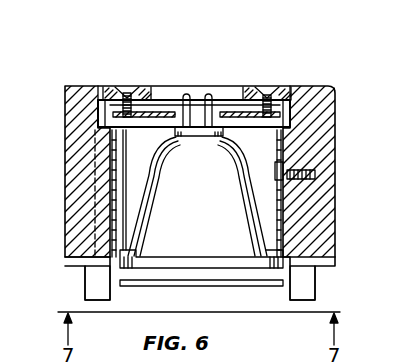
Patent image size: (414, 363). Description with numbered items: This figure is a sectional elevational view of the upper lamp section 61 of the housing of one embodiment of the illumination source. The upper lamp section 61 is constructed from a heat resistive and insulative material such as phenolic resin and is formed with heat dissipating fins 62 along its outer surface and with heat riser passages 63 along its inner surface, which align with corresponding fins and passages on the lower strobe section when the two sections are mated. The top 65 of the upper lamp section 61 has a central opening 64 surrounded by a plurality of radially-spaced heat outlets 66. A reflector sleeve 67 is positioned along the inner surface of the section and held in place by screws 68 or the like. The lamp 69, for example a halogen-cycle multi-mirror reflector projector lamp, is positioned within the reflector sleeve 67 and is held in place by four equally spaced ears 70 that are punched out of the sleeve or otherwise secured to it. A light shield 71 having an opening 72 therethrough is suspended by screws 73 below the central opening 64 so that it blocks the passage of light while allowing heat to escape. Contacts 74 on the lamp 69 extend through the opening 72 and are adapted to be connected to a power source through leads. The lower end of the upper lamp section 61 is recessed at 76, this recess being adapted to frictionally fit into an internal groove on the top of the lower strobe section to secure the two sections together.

The upper lamp section 61 is at (343, 158).
The heat dissipating fins 62 is at (337, 236).
The heat riser passages 63 is at (95, 213).
The central opening 64 is at (247, 95).
The top 65 is at (141, 94).
The heat outlets 66 is at (105, 88).
The reflector sleeve 67 is at (118, 168).
The screws 68 is at (318, 181).
The lamp 69 is at (241, 198).
The ears 70 is at (124, 250).
The light shield 71 is at (163, 114).
The opening 72 is at (222, 113).
The screws 73 is at (127, 92).
The contacts 74 is at (188, 96).
The recess 76 is at (85, 286).